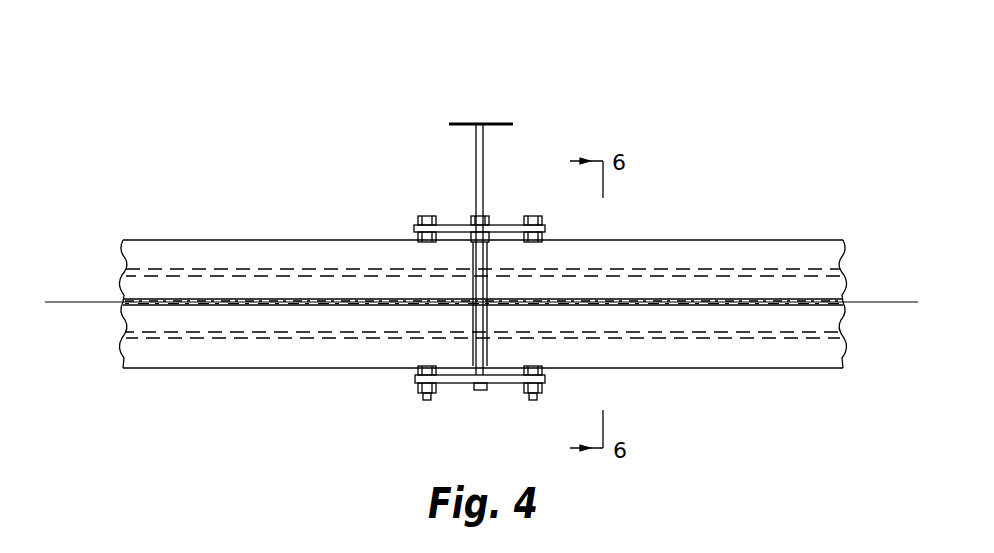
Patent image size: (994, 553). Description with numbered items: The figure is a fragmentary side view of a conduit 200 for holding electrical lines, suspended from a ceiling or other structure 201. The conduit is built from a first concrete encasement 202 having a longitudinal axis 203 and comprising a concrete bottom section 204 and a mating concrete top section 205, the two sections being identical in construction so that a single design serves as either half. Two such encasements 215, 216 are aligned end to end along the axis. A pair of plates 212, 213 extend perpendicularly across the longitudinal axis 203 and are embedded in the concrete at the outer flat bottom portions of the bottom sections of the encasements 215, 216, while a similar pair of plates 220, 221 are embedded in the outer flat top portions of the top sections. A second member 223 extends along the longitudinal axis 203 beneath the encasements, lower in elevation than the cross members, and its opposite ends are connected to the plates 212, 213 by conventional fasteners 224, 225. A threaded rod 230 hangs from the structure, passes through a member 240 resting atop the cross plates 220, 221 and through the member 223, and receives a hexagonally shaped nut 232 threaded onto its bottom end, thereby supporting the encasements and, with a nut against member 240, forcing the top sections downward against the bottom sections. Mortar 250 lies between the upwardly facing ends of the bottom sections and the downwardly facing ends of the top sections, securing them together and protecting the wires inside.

The conduit 200 is at (548, 60).
The ceiling or other structure 201 is at (470, 122).
The first concrete encasement 202 is at (218, 238).
The longitudinal axis 203 is at (75, 302).
The concrete bottom section 204 is at (185, 355).
The concrete top section 205 is at (145, 248).
The plate 212 is at (418, 367).
The plate 213 is at (545, 368).
The concrete encasement 215 is at (290, 355).
The second identical encasement 216 is at (680, 365).
The plate 220 is at (416, 238).
The plate 221 is at (548, 240).
The second member 223 is at (488, 384).
The fastener 224 is at (424, 399).
The fastener 225 is at (533, 398).
The threaded rod 230 is at (485, 148).
The hexagonally shaped nut 232 is at (476, 381).
The member 240 is at (442, 225).
The mortar 250 is at (215, 300).